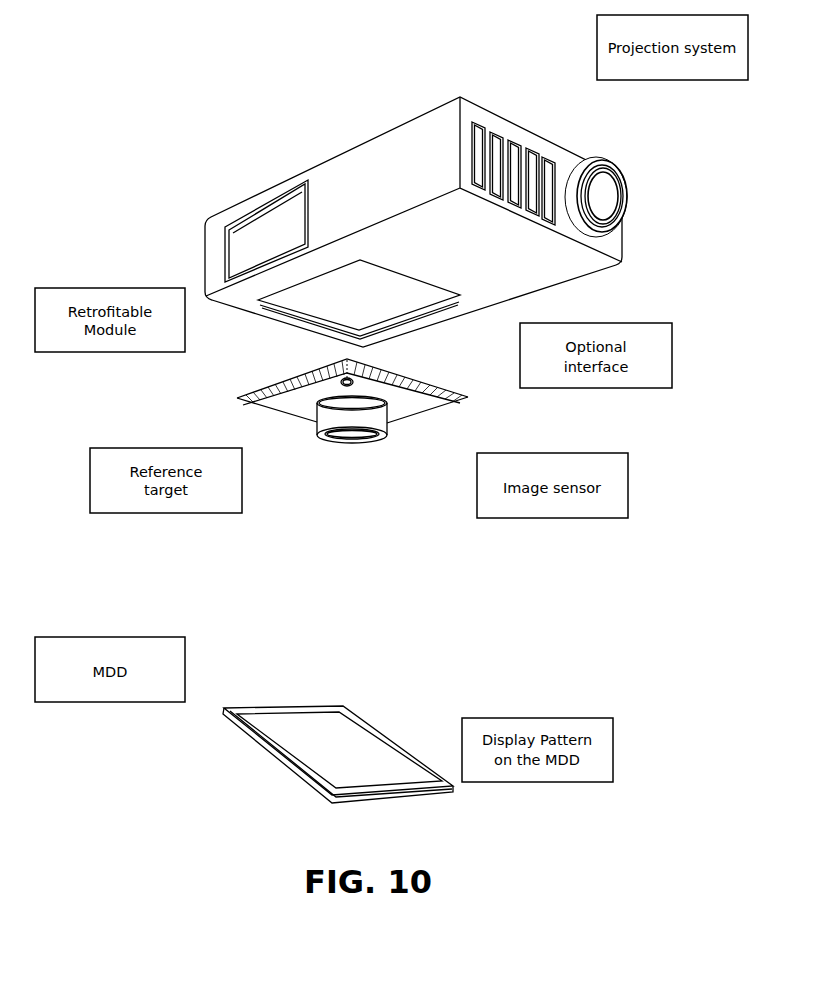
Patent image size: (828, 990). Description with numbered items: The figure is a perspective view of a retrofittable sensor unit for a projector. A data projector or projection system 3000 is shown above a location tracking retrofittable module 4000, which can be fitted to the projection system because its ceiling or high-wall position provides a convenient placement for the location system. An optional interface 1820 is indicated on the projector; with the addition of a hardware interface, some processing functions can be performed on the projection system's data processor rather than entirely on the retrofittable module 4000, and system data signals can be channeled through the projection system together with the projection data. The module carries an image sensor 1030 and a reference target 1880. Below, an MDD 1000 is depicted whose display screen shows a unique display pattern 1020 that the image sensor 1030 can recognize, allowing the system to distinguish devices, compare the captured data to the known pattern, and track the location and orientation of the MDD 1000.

The projection system 3000 is at (472, 96).
The optional interface 1820 is at (403, 307).
The retrofittable module 4000 is at (260, 383).
The reference target 1880 is at (275, 405).
The image sensor 1030 is at (362, 440).
The MDD 1000 is at (257, 730).
The unique pattern 1020 is at (358, 755).